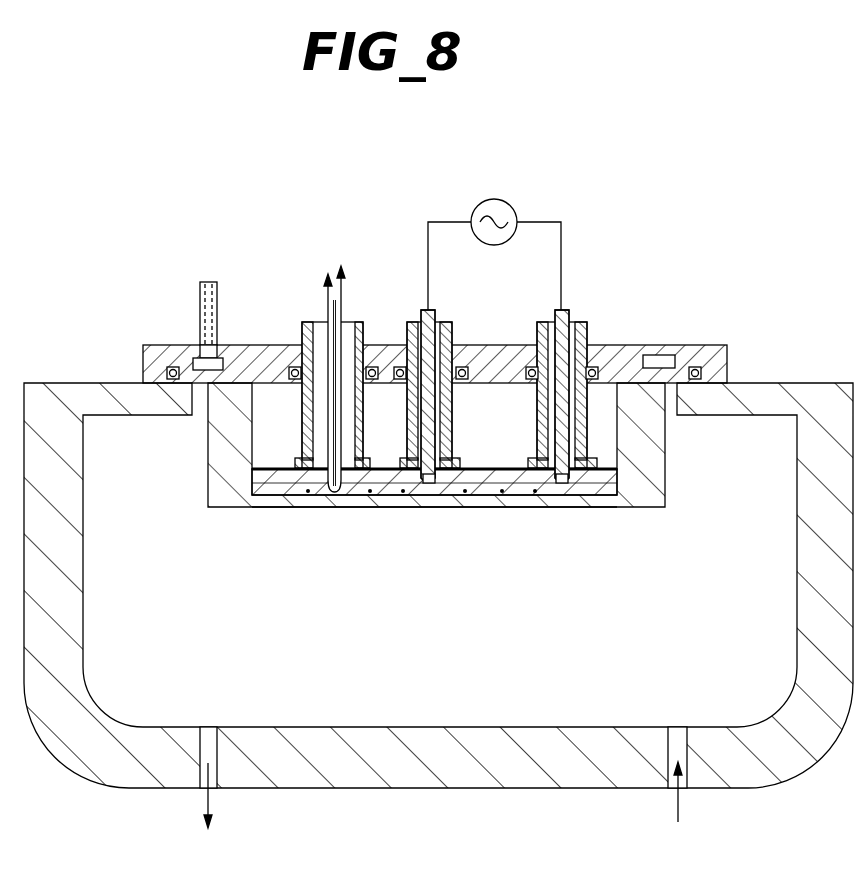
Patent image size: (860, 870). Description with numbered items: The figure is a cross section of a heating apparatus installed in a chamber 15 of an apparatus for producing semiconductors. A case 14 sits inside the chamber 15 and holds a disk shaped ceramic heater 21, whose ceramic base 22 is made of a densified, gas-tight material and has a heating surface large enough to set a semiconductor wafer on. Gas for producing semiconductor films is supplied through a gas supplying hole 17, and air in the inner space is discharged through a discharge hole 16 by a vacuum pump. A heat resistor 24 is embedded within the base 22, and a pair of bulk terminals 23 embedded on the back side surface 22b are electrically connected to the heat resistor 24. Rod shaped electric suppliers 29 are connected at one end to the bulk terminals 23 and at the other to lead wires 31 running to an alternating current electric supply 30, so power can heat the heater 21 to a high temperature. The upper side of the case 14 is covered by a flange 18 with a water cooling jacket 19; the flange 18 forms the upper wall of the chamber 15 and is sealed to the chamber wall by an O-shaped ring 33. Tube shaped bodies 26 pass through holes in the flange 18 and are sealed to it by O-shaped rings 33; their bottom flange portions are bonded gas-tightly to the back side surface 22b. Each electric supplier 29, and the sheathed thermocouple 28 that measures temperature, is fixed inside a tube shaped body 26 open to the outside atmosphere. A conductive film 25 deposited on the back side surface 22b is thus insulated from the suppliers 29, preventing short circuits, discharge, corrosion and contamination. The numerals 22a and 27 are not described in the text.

The case 14 is at (666, 480).
The chamber 15 is at (535, 778).
The discharge hole 16 is at (210, 735).
The gas supplying hole 17 is at (679, 735).
The flange 18 is at (165, 345).
The water cooling jacket 19 is at (216, 292).
The ceramic heater 21 is at (540, 516).
The ceramic base 22 is at (416, 496).
The lower surface of electrode plate 22a is at (486, 507).
The back side surface 22b is at (305, 465).
The bulk terminal 23 is at (428, 483).
The heat resistor 24 is at (366, 480).
The conductive film 25 is at (500, 468).
The tube shaped body 26 is at (450, 330).
The probe tube 27 is at (315, 322).
The thermocouple 28 is at (341, 290).
The electric supplier 29 is at (425, 312).
The alternating current electric supply 30 is at (517, 207).
The lead wire 31 is at (563, 240).
The O-shaped ring 33 is at (400, 366).